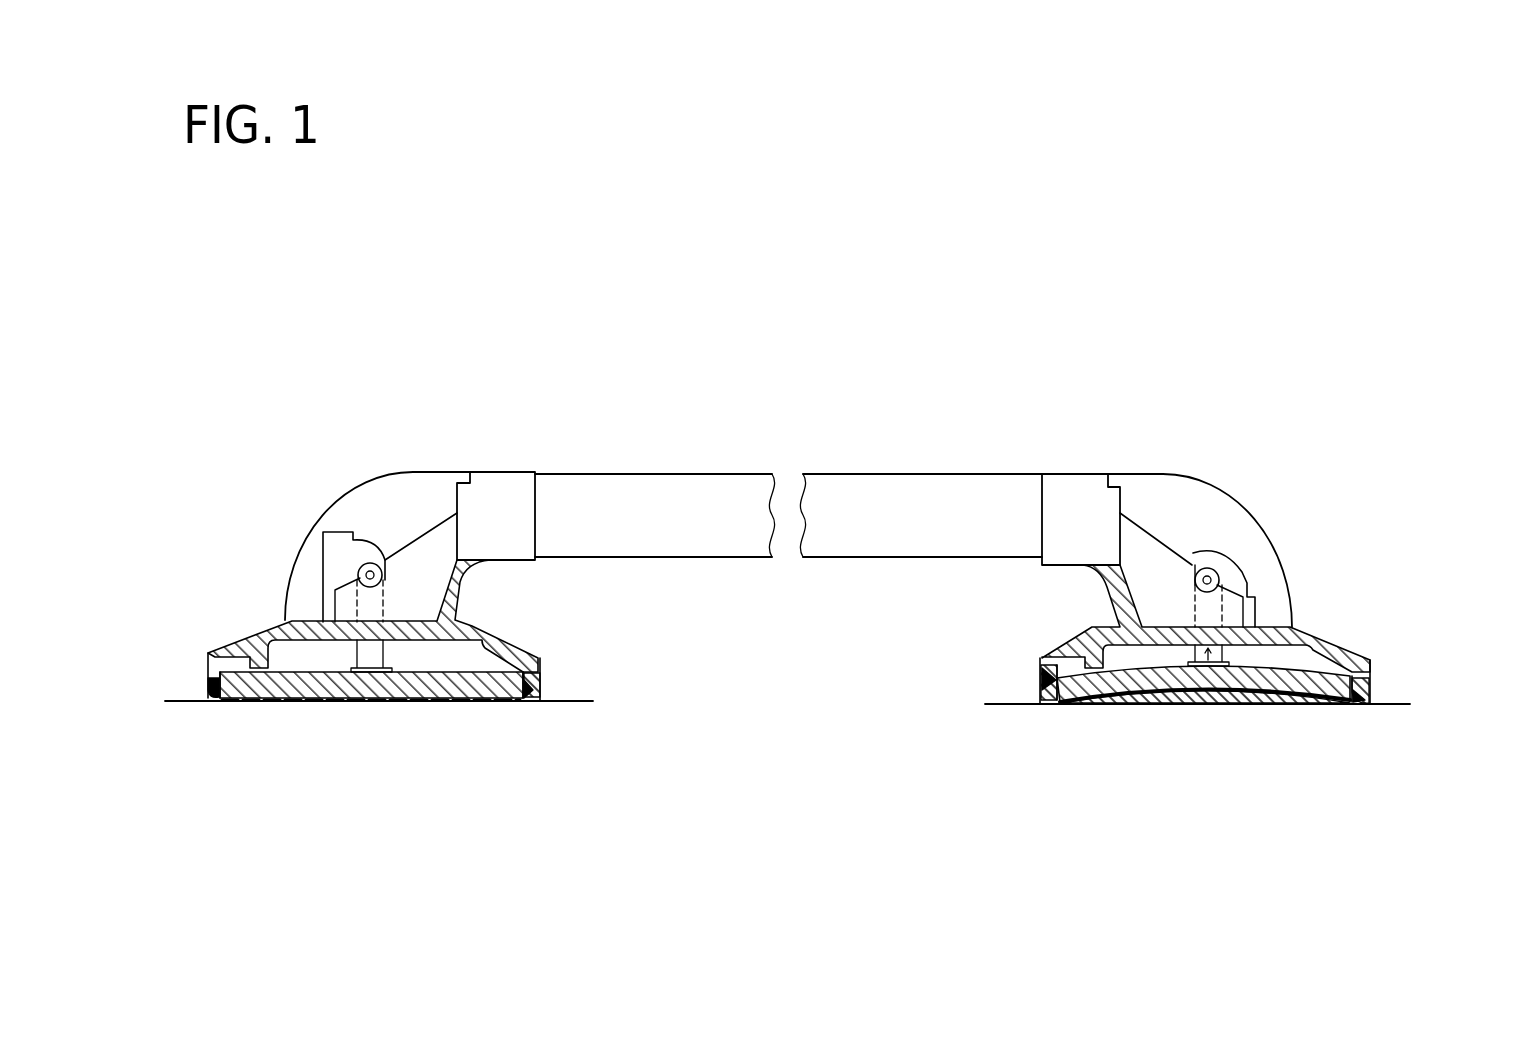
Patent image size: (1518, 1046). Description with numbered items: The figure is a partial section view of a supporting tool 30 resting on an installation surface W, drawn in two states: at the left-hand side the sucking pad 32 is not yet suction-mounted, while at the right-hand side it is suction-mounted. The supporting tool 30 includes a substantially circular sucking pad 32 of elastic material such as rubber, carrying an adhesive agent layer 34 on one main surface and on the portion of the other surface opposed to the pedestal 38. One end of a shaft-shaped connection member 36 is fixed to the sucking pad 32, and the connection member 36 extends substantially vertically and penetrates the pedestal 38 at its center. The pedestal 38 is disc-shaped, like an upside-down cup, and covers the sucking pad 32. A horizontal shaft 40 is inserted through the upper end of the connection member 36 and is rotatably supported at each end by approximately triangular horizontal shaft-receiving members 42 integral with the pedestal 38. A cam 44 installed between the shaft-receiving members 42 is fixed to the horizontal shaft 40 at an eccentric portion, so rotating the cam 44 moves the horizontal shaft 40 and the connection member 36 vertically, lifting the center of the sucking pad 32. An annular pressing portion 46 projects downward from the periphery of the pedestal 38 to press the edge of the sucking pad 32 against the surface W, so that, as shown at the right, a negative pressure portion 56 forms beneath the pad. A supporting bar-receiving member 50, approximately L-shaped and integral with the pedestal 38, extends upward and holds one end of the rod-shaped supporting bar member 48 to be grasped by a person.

The supporting tool 30 is at (382, 259).
The sucking pad 32 is at (280, 700).
The adhesive agent layer 34 is at (463, 700).
The connection member 36 is at (333, 597).
The pedestal 38 is at (495, 635).
The horizontal shaft 40 is at (360, 575).
The horizontal shaft-receiving member 42 is at (425, 543).
The cam 44 is at (334, 547).
The pressing portion 46 is at (205, 667).
The supporting bar member 48 is at (645, 500).
The supporting bar-receiving member 50 is at (498, 488).
The negative pressure portion 56 is at (1210, 702).
The workpiece W is at (582, 700).